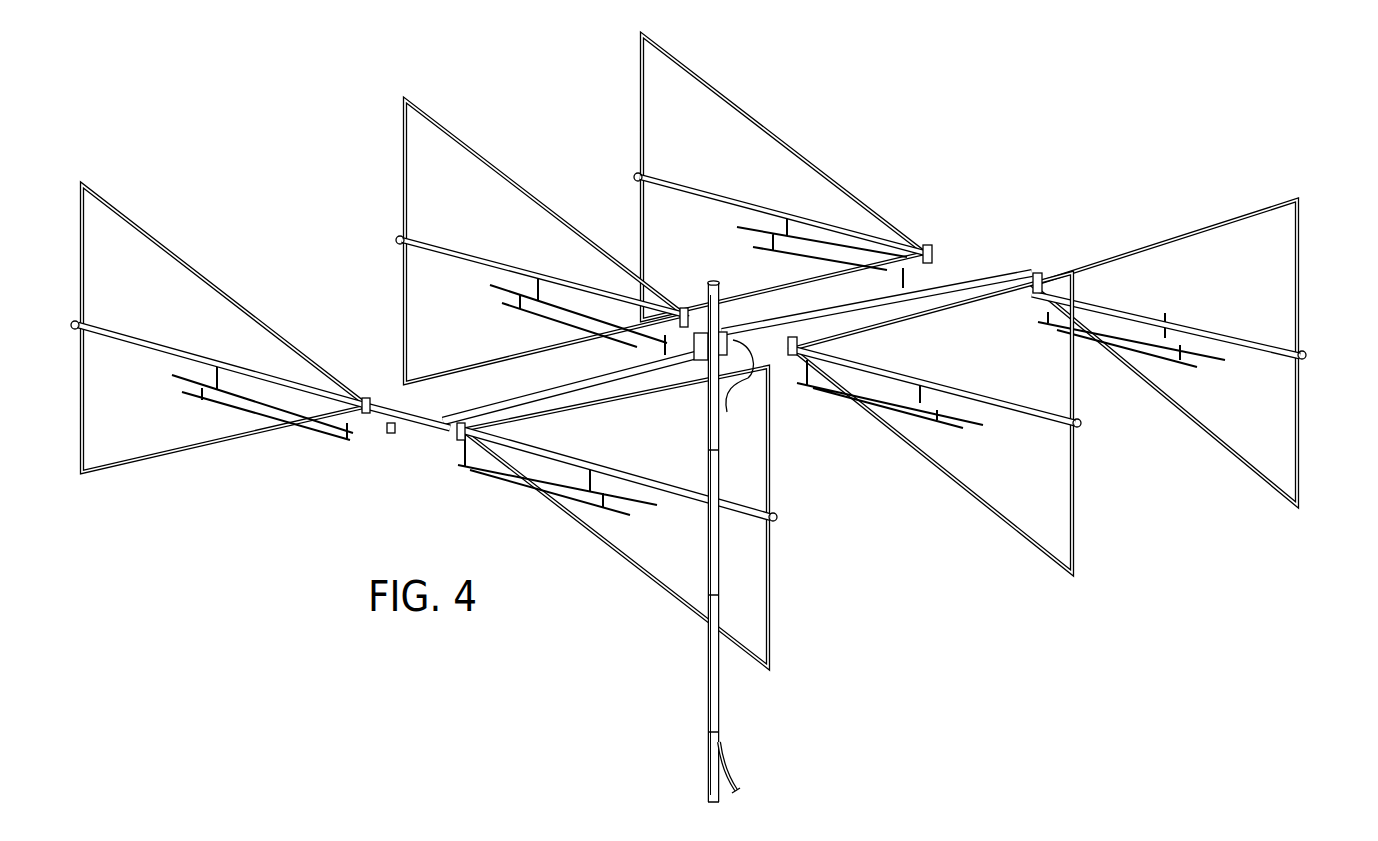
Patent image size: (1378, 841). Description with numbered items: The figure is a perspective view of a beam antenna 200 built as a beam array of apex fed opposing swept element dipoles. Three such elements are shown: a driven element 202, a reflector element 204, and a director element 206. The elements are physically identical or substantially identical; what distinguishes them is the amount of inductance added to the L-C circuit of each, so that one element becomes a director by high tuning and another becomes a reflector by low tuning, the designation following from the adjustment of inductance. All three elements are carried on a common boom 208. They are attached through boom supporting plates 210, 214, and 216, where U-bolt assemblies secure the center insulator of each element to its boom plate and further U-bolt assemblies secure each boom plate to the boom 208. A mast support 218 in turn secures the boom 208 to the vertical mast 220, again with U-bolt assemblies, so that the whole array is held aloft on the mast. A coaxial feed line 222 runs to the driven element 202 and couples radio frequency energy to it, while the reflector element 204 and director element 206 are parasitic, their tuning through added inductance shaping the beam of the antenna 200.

The beam antenna 200 is at (1012, 118).
The driven element 202 is at (1080, 561).
The reflector element 204 is at (1306, 483).
The director element 206 is at (778, 658).
The boom 208 is at (500, 394).
The boom supporting plate 210 is at (422, 425).
The boom supporting plate 214 is at (748, 376).
The boom supporting plate 216 is at (990, 282).
The mast support 218 is at (697, 362).
The mast 220 is at (707, 445).
The coaxial feed line 222 is at (725, 768).